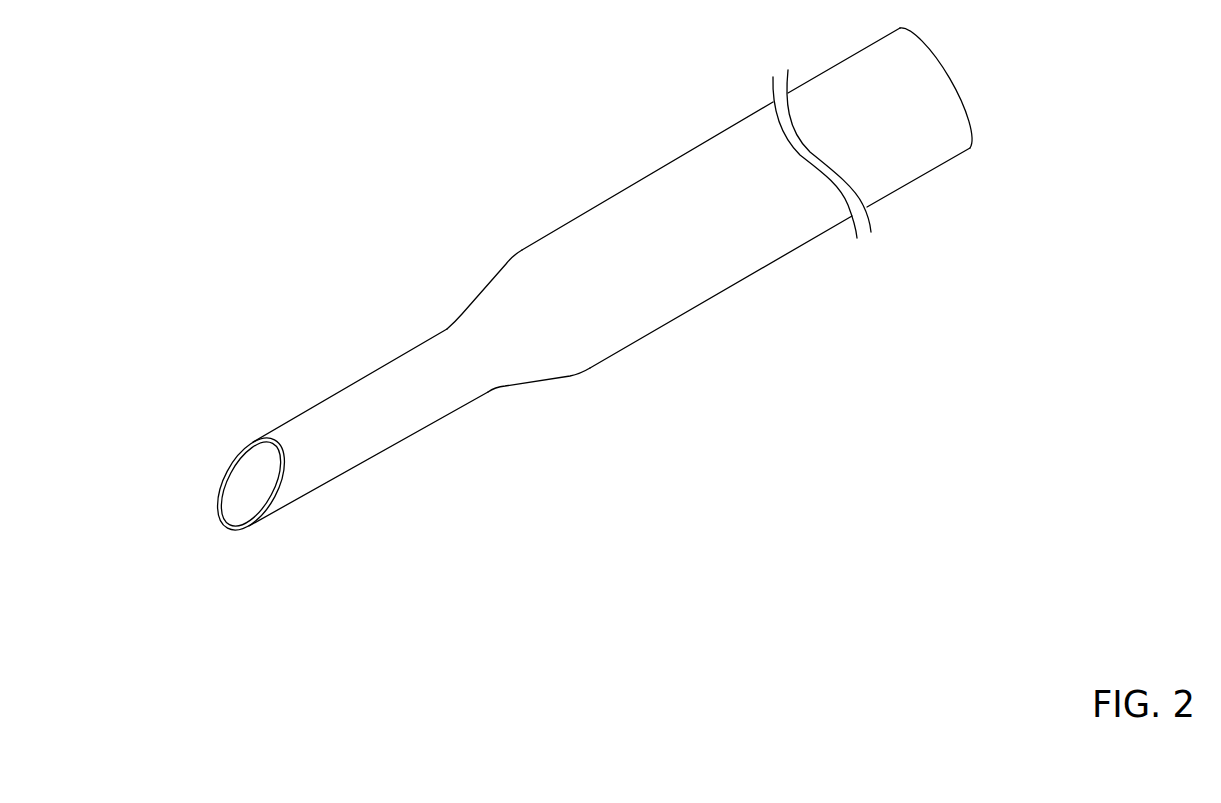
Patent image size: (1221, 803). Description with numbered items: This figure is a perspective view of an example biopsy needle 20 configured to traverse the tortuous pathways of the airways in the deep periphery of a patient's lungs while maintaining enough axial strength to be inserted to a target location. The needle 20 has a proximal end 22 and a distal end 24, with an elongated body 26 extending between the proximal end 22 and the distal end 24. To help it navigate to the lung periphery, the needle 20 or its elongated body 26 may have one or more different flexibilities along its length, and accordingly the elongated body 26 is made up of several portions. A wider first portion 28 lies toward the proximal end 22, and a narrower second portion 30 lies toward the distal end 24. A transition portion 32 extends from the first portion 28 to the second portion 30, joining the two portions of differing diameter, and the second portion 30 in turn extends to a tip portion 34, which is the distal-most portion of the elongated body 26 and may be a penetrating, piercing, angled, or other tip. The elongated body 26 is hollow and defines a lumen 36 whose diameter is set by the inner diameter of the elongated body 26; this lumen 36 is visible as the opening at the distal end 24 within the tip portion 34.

The needle 20 is at (539, 125).
The proximal end 22 is at (960, 73).
The distal end 24 is at (232, 528).
The elongated body 26 is at (659, 372).
The first portion 28 is at (723, 292).
The second portion 30 is at (348, 388).
The transition portion 32 is at (485, 292).
The tip portion 34 is at (237, 463).
The lumen 36 is at (239, 485).